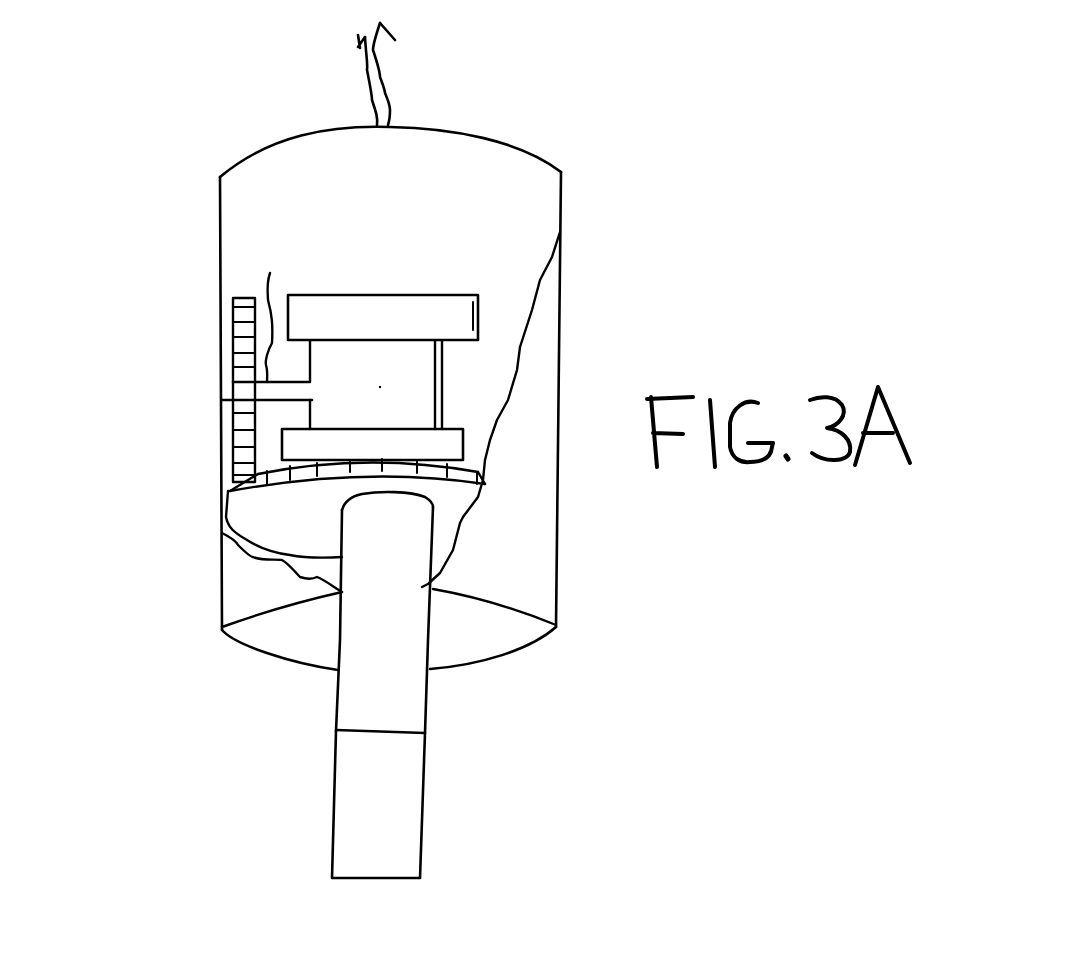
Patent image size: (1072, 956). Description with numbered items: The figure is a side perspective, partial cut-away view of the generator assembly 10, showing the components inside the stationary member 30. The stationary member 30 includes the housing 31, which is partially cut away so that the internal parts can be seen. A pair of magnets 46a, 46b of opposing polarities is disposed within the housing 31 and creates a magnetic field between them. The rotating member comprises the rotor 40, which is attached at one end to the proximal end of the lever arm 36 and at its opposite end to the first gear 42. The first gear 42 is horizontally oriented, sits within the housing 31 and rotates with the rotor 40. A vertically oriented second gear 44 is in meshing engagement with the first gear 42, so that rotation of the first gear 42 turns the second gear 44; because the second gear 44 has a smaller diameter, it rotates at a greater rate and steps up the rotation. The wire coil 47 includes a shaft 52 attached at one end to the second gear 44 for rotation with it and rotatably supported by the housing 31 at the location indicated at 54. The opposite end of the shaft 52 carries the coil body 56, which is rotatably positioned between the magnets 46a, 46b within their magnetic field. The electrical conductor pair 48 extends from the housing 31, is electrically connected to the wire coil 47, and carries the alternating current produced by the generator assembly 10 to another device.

The generator assembly 10 is at (873, 262).
The stationary member 30 is at (292, 158).
The housing 31 is at (543, 550).
The lever arm 36 is at (410, 807).
The rotor 40 is at (410, 690).
The first gear 42 is at (265, 522).
The second gear 44 is at (248, 348).
The magnet 46a is at (452, 297).
The magnet 46b is at (455, 437).
The wire coil 47 is at (348, 360).
The electrical conductor pair 48 is at (380, 82).
The shaft 52 is at (270, 273).
The rotatable support 54 is at (222, 390).
The coil body 56 is at (380, 387).